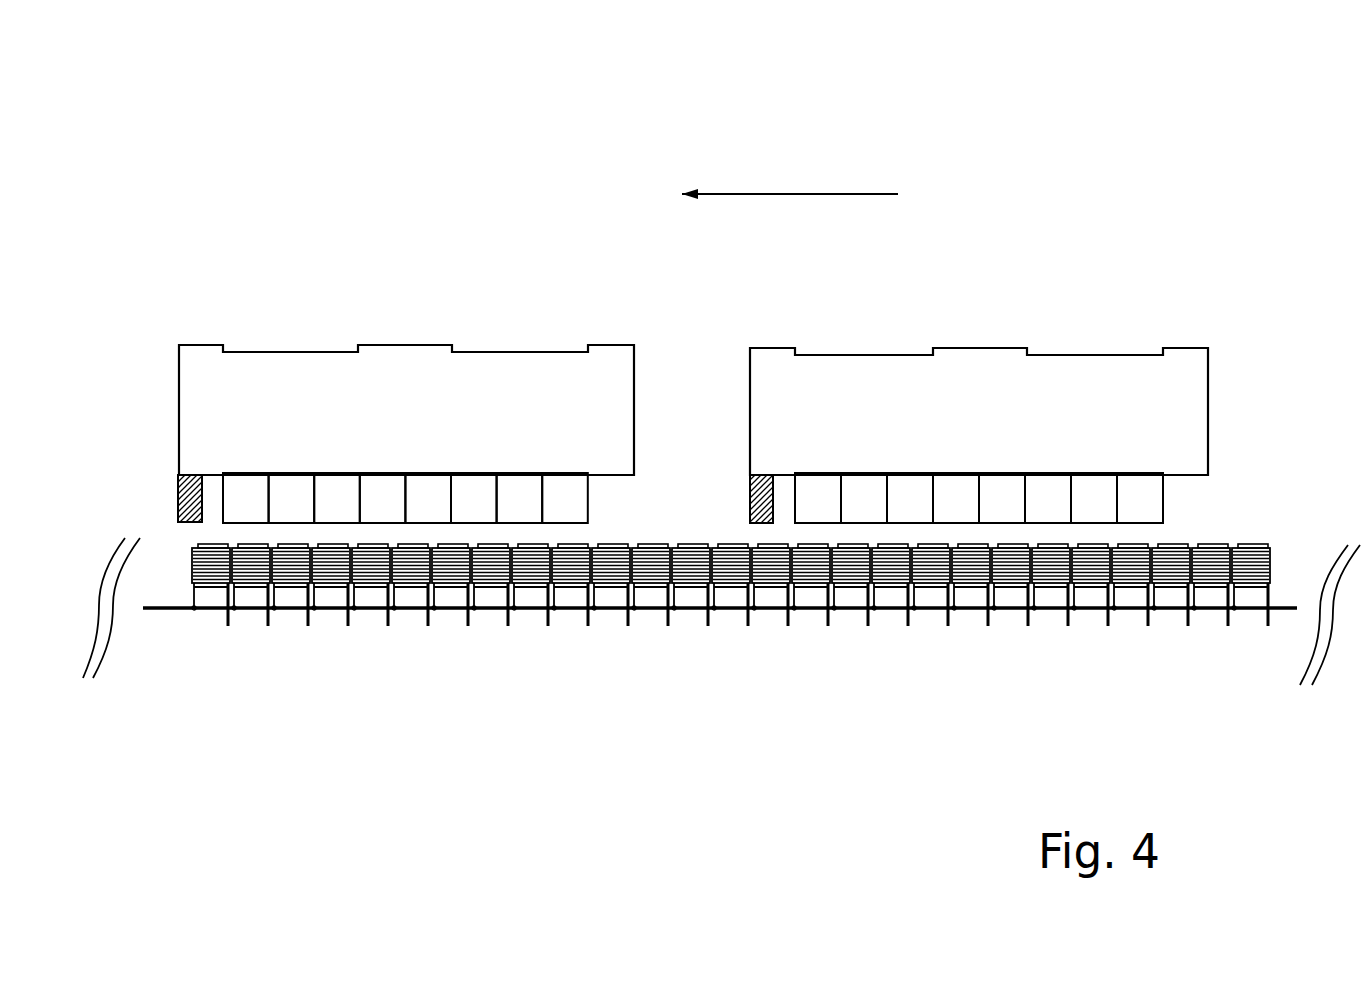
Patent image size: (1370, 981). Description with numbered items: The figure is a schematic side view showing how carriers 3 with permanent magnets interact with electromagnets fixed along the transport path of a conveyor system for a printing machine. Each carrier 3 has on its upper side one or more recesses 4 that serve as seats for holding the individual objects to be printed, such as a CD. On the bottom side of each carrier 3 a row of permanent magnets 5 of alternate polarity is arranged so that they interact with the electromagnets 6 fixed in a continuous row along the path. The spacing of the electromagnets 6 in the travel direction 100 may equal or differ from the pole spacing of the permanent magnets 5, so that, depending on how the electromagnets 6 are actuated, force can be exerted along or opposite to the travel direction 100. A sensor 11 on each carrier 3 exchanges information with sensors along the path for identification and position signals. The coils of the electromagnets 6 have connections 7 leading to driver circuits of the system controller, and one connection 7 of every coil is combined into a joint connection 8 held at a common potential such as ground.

The travel direction 100 is at (792, 193).
The carrier 3 is at (230, 400).
The recess 4 is at (520, 352).
The permanent magnets 5 is at (1037, 487).
The electromagnets 6 is at (965, 573).
The connections 7 is at (627, 628).
The joint connection 8 is at (162, 610).
The sensor 11 is at (180, 490).